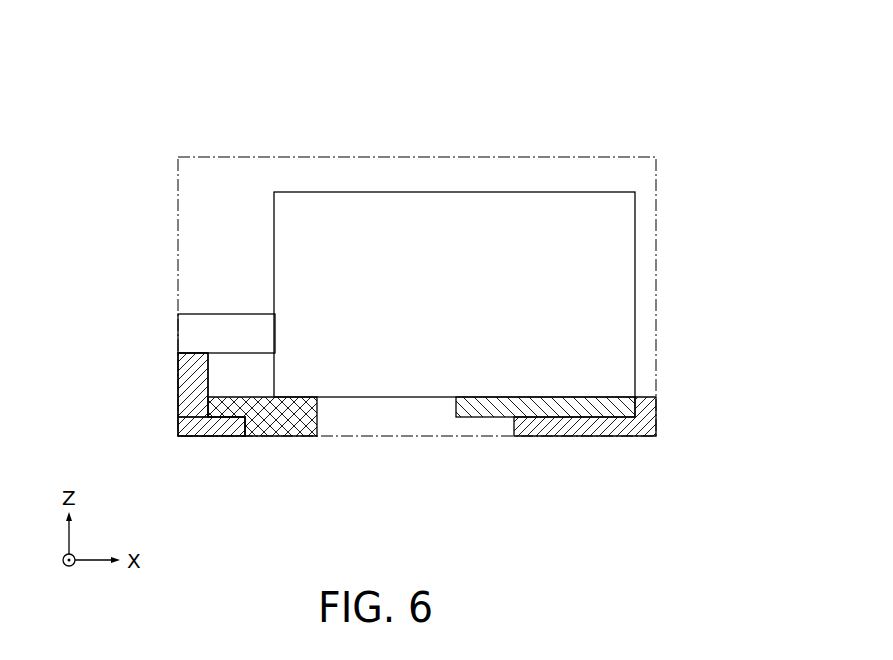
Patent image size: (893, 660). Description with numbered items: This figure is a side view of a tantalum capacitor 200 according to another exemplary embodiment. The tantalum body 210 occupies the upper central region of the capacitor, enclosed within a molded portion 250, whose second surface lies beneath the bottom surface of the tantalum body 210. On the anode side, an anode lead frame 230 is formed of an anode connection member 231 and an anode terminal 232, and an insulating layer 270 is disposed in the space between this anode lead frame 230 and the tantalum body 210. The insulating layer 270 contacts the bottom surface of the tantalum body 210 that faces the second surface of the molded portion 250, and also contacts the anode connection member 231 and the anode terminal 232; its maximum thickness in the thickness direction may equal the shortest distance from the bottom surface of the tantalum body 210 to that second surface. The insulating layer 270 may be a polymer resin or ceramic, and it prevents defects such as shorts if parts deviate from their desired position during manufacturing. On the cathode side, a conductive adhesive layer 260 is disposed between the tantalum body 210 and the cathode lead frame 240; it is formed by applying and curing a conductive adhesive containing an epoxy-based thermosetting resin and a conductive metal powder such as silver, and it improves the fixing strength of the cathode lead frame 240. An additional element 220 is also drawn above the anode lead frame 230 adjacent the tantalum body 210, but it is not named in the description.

The tantalum capacitor 200 is at (387, 56).
The tantalum body 210 is at (623, 265).
The substrate 220 is at (186, 325).
The anode lead frame 230 is at (196, 438).
The anode connection member 231 is at (186, 413).
The anode terminal 232 is at (232, 434).
The cathode lead frame 240 is at (618, 430).
The molded portion 250 is at (593, 155).
The conductive adhesive layer 260 is at (483, 412).
The insulating layer 270 is at (285, 434).